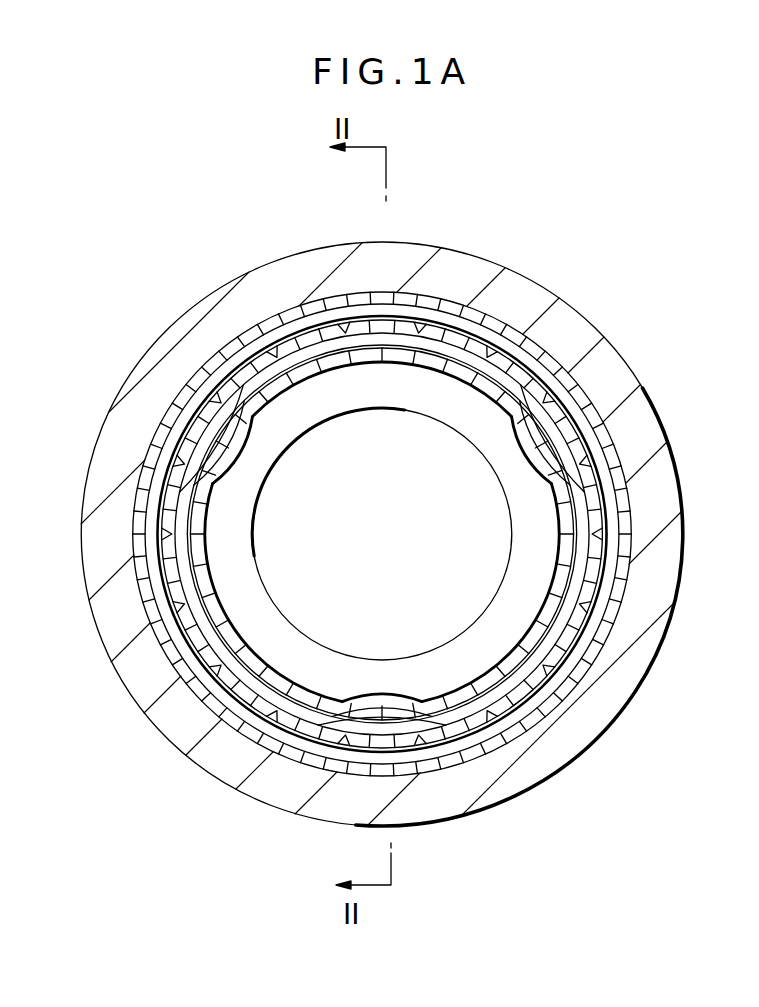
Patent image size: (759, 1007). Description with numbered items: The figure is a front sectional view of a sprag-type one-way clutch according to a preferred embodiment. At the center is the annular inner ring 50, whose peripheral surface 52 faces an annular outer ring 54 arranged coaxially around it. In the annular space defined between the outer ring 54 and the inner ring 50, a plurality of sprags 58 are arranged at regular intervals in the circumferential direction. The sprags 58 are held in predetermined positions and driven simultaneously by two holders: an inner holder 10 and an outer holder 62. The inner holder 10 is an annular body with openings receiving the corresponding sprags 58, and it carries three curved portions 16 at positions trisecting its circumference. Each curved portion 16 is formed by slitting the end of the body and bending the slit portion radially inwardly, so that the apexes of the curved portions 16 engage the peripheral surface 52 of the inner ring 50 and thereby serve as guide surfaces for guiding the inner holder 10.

The inner holder 10 is at (474, 387).
The curved portions 16 is at (226, 440).
The inner ring 50 is at (357, 393).
The outer peripheral surface 52 is at (281, 392).
The outer ring 54 is at (483, 268).
The sprags 58 is at (380, 293).
The outer holder 62 is at (270, 333).